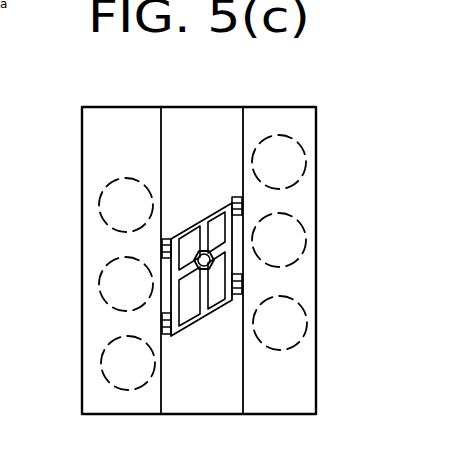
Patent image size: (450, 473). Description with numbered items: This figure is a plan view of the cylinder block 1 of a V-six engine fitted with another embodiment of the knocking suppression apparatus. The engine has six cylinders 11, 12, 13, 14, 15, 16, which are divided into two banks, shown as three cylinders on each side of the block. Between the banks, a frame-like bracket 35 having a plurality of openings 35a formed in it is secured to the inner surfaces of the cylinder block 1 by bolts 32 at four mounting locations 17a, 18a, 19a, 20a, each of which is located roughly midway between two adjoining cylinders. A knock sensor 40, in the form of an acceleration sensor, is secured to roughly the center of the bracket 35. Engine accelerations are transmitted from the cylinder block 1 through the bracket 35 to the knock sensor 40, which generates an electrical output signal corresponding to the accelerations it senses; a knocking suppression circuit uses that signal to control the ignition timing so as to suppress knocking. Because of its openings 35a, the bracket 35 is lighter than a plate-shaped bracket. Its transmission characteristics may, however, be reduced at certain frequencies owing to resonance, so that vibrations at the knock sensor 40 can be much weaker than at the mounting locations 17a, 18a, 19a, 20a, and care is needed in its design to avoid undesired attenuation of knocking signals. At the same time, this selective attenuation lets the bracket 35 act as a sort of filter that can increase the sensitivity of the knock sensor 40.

The cylinder block 1 is at (150, 107).
The cylinder 11 is at (306, 156).
The cylinder 12 is at (98, 213).
The cylinder 13 is at (306, 234).
The cylinder 14 is at (98, 291).
The cylinder 15 is at (307, 317).
The cylinder 16 is at (98, 363).
The mounting location 17a is at (243, 204).
The mounting location 18a is at (243, 288).
The mounting location 19a is at (162, 246).
The mounting location 20a is at (164, 334).
The bolt 32 is at (233, 200).
The frame-like bracket 35 is at (200, 226).
The opening 35a is at (210, 222).
The knock sensor 40 is at (200, 270).